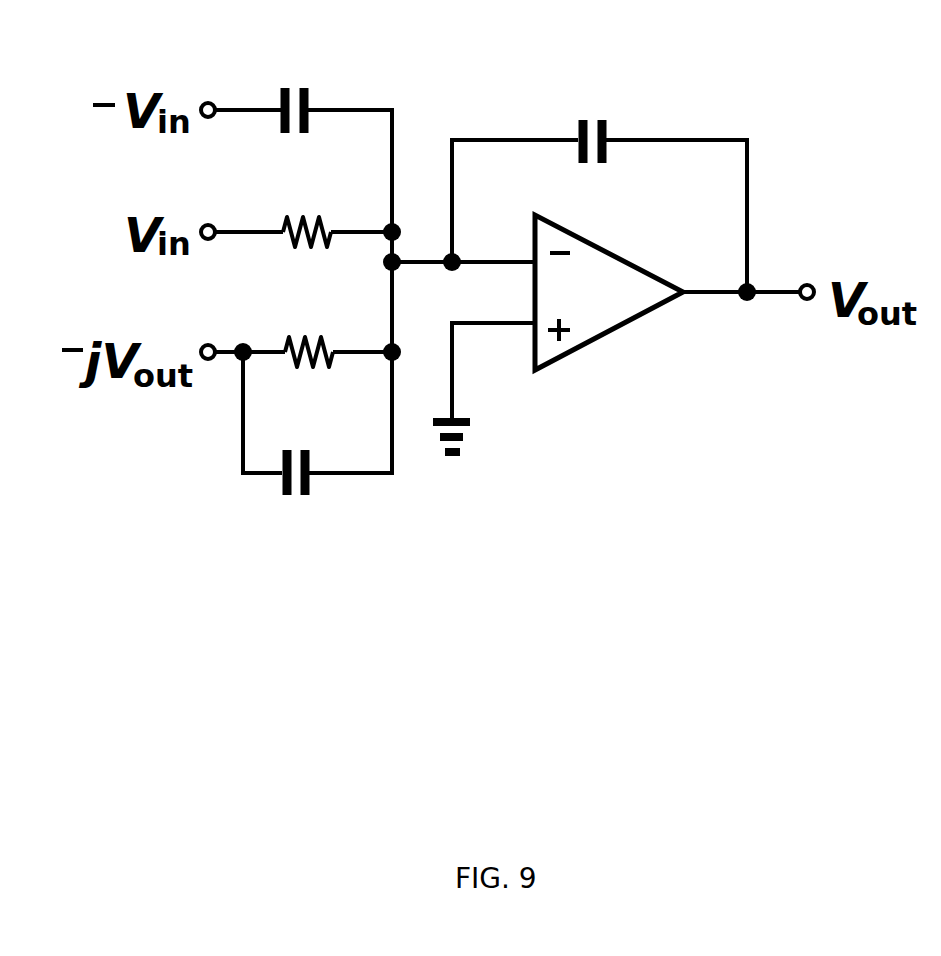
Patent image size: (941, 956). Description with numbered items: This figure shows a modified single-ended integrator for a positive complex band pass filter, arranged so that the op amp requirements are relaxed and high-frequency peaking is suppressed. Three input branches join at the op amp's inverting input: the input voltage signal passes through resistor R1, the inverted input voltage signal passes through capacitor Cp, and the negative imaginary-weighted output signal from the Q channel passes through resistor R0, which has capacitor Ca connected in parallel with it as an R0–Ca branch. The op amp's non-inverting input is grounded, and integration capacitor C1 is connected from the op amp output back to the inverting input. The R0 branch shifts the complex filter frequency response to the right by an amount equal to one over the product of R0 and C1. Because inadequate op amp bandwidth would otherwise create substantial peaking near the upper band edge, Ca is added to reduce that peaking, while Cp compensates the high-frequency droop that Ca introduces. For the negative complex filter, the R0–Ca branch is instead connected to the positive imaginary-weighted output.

The compensation capacitor Cp is at (304, 75).
The input resistor R1 is at (303, 204).
The frequency-shift resistor R0 is at (303, 322).
The peaking-suppression capacitor Ca is at (318, 423).
The integration capacitor C1 is at (599, 177).